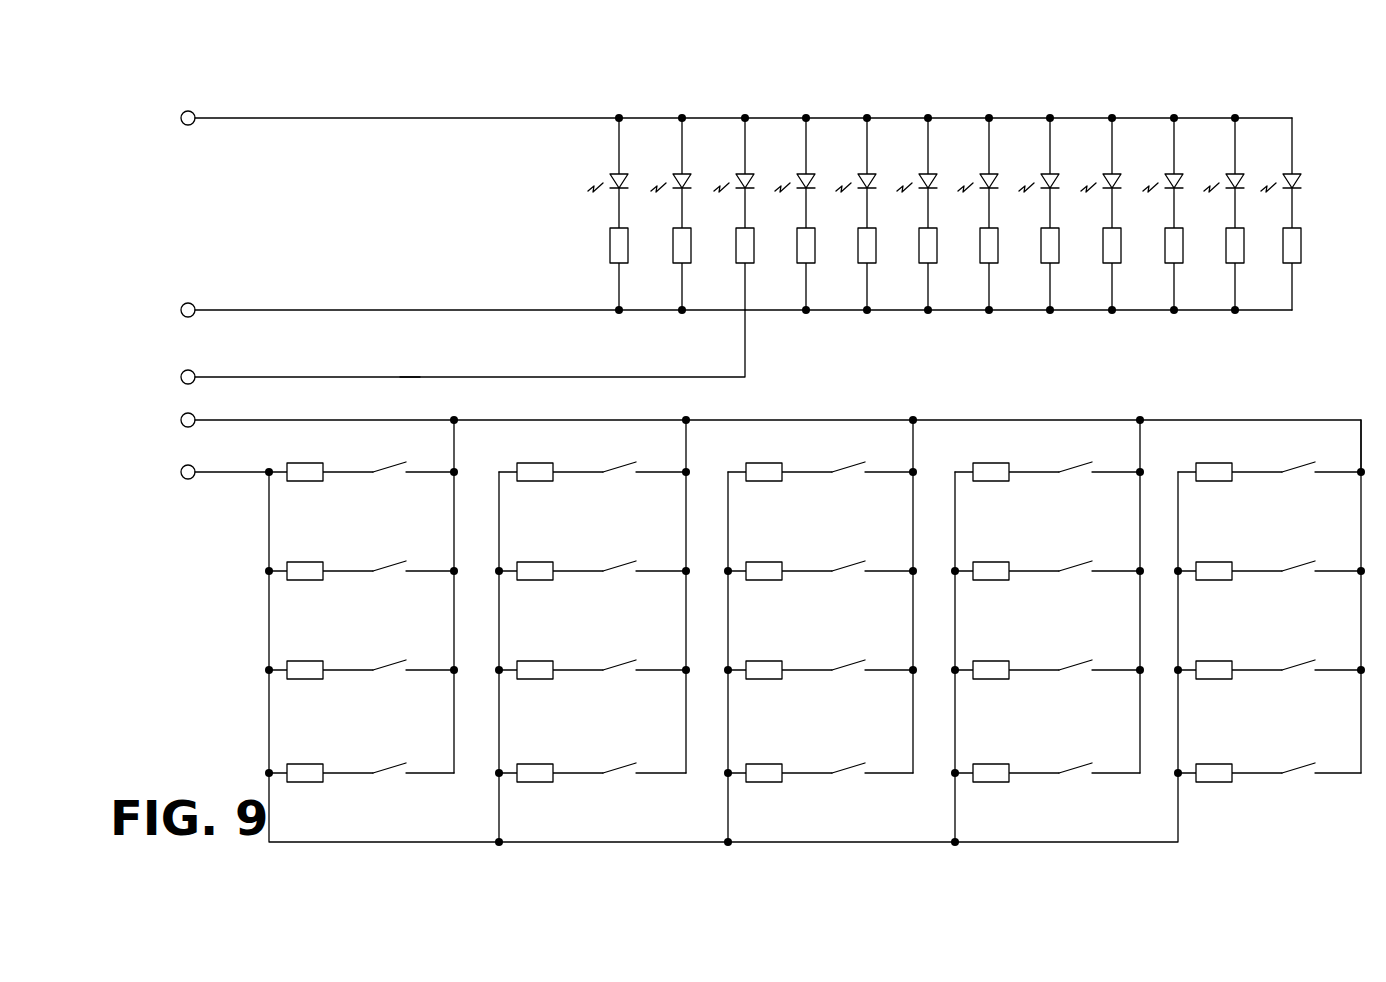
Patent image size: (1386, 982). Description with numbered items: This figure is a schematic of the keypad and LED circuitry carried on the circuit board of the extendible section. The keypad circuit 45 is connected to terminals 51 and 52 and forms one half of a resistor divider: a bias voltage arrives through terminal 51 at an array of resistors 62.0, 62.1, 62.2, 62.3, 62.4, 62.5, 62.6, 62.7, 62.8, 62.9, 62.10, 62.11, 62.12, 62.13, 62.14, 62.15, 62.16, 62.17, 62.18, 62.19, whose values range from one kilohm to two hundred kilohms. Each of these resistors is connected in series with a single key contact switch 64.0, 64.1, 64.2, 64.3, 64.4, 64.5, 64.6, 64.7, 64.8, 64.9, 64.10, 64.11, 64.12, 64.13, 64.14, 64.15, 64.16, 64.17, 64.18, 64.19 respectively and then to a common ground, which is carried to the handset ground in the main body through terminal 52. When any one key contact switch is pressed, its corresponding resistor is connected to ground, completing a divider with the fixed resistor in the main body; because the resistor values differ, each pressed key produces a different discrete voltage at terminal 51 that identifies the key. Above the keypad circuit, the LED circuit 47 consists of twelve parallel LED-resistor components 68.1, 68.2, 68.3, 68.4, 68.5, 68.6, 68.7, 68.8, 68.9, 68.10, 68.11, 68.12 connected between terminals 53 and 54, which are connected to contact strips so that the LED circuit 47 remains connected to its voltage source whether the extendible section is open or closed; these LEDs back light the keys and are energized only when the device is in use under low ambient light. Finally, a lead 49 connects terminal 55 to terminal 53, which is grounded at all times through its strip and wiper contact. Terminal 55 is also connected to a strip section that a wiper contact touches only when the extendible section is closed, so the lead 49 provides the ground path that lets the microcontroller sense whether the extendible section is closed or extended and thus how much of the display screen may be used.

The keypad circuit 45 is at (568, 862).
The LED circuit 47 is at (1027, 57).
The lead 49 is at (405, 375).
The terminal 51 is at (204, 472).
The terminal 52 is at (750, 438).
The terminal 53 is at (715, 310).
The terminal 54 is at (715, 118).
The terminal 55 is at (279, 377).
The resistor 62.0 is at (316, 481).
The resistor 62.1 is at (546, 481).
The resistor 62.2 is at (775, 481).
The resistor 62.3 is at (1002, 481).
The resistor 62.4 is at (1225, 481).
The resistor 62.5 is at (316, 580).
The resistor 62.6 is at (546, 580).
The resistor 62.7 is at (775, 580).
The resistor 62.8 is at (1002, 580).
The resistor 62.9 is at (1225, 580).
The resistor 62.10 is at (316, 679).
The resistor 62.11 is at (546, 679).
The resistor 62.12 is at (775, 679).
The resistor 62.13 is at (1002, 679).
The resistor 62.14 is at (1225, 679).
The resistor 62.15 is at (316, 782).
The resistor 62.16 is at (546, 782).
The resistor 62.17 is at (775, 782).
The resistor 62.18 is at (1002, 782).
The resistor 62.19 is at (1225, 782).
The key contact switch 64.0 is at (397, 465).
The key contact switch 64.1 is at (627, 465).
The key contact switch 64.2 is at (856, 465).
The key contact switch 64.3 is at (1083, 465).
The key contact switch 64.4 is at (1306, 465).
The key contact switch 64.5 is at (397, 564).
The key contact switch 64.6 is at (627, 564).
The key contact switch 64.7 is at (856, 564).
The key contact switch 64.8 is at (1083, 564).
The key contact switch 64.9 is at (1306, 564).
The key contact switch 64.10 is at (397, 663).
The key contact switch 64.11 is at (627, 663).
The key contact switch 64.12 is at (856, 663).
The key contact switch 64.13 is at (1083, 663).
The key contact switch 64.14 is at (1306, 663).
The key contact switch 64.15 is at (397, 766).
The key contact switch 64.16 is at (627, 766).
The key contact switch 64.17 is at (856, 766).
The key contact switch 64.18 is at (1083, 766).
The key contact switch 64.19 is at (1306, 766).
The LED-resistor component 68.1 is at (619, 148).
The LED-resistor component 68.2 is at (682, 148).
The LED-resistor component 68.3 is at (745, 148).
The LED-resistor component 68.4 is at (806, 148).
The LED-resistor component 68.5 is at (867, 148).
The LED-resistor component 68.6 is at (928, 148).
The LED-resistor component 68.7 is at (989, 148).
The LED-resistor component 68.8 is at (1050, 148).
The LED-resistor component 68.9 is at (1112, 148).
The LED-resistor component 68.10 is at (1174, 148).
The LED-resistor component 68.11 is at (1235, 148).
The LED-resistor component 68.12 is at (1292, 148).